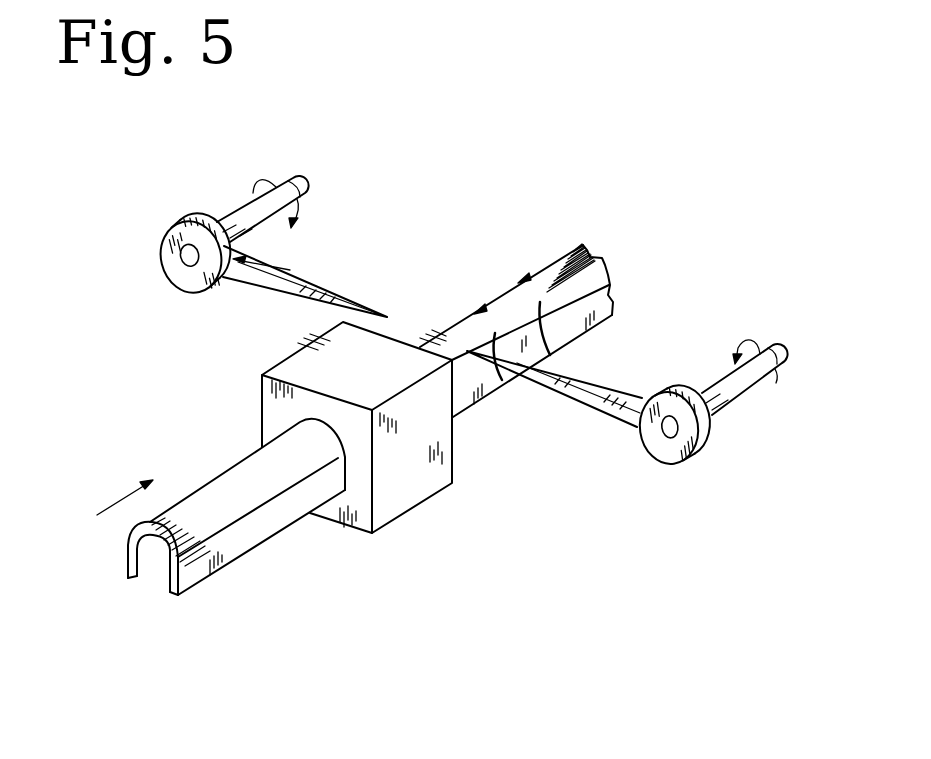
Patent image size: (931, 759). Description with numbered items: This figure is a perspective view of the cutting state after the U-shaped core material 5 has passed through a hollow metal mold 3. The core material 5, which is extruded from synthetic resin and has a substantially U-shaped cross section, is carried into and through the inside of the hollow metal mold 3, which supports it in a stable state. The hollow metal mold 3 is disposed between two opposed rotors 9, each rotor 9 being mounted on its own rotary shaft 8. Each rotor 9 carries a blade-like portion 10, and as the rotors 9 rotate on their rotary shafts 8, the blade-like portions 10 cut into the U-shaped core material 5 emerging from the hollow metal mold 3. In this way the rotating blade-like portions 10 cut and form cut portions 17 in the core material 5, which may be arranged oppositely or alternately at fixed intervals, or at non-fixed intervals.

The hollow metal mold 3 is at (402, 493).
The U-shaped core material 5 is at (210, 497).
The rotary shaft 8 is at (247, 203).
The rotor 9 is at (183, 270).
The blade-like portion 10 is at (260, 278).
The cut portion 17 is at (521, 280).